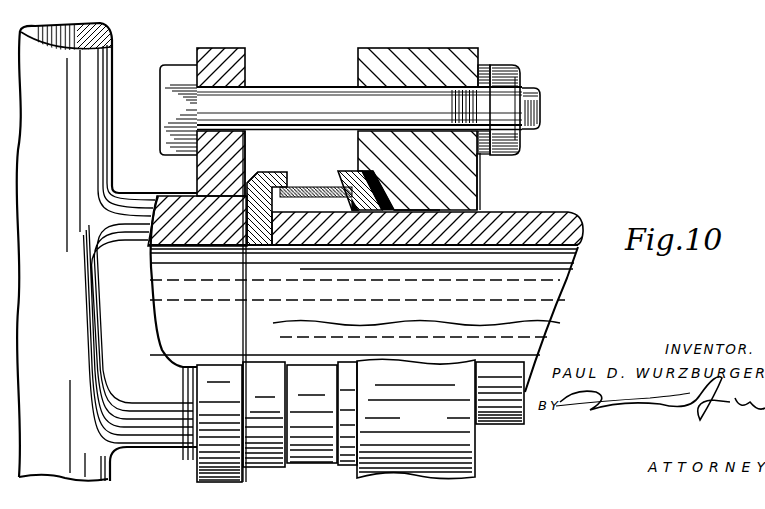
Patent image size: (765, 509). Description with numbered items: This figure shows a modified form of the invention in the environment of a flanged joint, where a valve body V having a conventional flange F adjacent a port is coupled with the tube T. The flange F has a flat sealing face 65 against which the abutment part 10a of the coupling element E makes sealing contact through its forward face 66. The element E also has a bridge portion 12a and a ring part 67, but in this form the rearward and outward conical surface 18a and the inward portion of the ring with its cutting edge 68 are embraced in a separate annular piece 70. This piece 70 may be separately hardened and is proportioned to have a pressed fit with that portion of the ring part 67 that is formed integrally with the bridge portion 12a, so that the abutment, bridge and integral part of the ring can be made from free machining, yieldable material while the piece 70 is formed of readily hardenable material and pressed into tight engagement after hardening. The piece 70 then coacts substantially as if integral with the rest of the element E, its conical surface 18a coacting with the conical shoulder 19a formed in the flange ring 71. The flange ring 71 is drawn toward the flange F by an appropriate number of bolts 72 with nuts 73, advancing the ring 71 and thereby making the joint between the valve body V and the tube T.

The valve body V is at (58, 270).
The flange F is at (216, 66).
The flange ring 71 is at (408, 72).
The nut 73 is at (508, 78).
The bolt 72 is at (533, 106).
The flat sealing face 65 is at (246, 169).
The forward face 66 is at (268, 170).
The ring part 67 is at (342, 171).
The cutting edge 68 is at (355, 197).
The bridge portion 12a is at (320, 177).
The conical shoulder 19a is at (393, 207).
The rearward and outward conical surface 18a is at (392, 176).
The tube T is at (547, 228).
The abutment part 10a is at (265, 210).
The coupling element E is at (374, 180).
The separate annular piece 70 is at (402, 214).